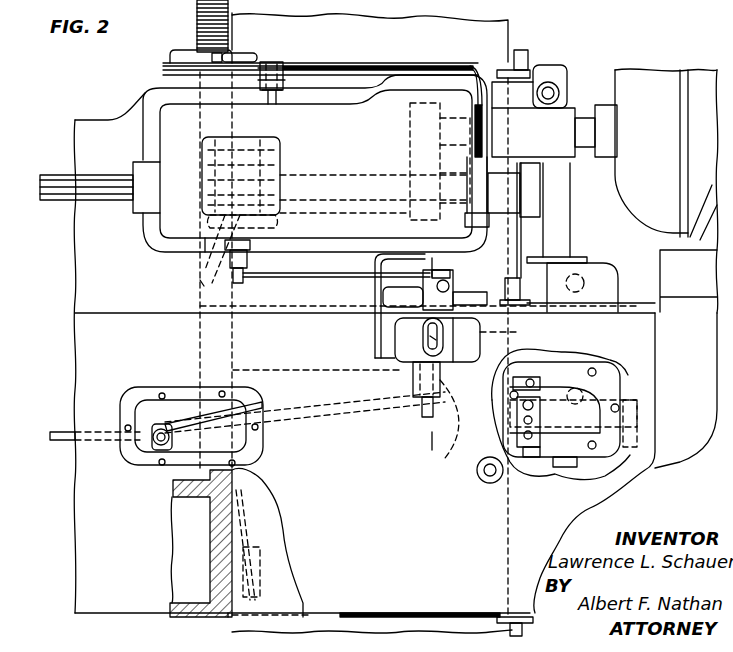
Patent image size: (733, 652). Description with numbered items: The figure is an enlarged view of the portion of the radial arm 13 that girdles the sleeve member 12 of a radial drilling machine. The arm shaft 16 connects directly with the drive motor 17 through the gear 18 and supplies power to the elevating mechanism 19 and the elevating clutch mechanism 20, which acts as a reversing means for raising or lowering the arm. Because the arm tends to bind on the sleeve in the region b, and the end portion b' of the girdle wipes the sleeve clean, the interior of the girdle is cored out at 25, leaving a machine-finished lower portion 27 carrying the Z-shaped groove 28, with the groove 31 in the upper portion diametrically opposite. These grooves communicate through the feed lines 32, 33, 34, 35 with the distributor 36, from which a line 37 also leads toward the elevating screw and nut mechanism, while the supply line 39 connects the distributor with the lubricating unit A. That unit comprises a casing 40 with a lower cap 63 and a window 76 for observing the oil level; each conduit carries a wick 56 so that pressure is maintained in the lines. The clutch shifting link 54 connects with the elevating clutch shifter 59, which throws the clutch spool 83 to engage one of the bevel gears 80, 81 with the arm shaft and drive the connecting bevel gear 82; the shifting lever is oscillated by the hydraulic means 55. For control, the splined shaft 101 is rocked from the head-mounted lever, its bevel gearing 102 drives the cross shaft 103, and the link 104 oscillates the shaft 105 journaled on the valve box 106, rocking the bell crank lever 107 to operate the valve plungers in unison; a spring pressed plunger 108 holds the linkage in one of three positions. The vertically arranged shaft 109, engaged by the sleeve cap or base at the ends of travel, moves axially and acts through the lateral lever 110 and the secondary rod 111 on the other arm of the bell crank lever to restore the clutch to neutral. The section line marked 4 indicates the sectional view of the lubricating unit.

The sleeve member 12 is at (493, 33).
The radial arm 13 is at (85, 258).
The arm shaft 16 is at (100, 179).
The drive motor 17 is at (643, 83).
The gear 18 is at (408, 122).
The elevating mechanism 19 is at (205, 10).
The elevating clutch mechanism 20 is at (195, 150).
The cored-out portion 25 is at (258, 472).
The lower portion 27 is at (233, 577).
The Z-shaped groove 28 is at (250, 548).
The Z-shaped groove 31 is at (505, 100).
The feed line 32 is at (170, 75).
The feed line 33 is at (170, 70).
The feed line 34 is at (262, 64).
The feed line 35 is at (342, 66).
The distributor 36 is at (284, 92).
The line 37 is at (235, 59).
The supply line 39 is at (381, 66).
The casing 40 is at (410, 386).
The clutch shifting link 54 is at (315, 273).
The hydraulic means 55 is at (462, 447).
The wick 56 is at (207, 496).
The elevating clutch shifter 59 is at (249, 266).
The lower cap 63 is at (420, 404).
The window 76 is at (433, 338).
The bevel gear 80 is at (207, 250).
The bevel gear 81 is at (275, 218).
The connecting bevel gear 82 is at (272, 140).
The clutch spool 83 is at (200, 283).
The splined shaft 101 is at (66, 432).
The bevel gearing 102 is at (150, 392).
The cross shaft 103 is at (160, 447).
The link 104 is at (305, 412).
The shaft 105 is at (530, 382).
The valve box 106 is at (597, 403).
The bell crank lever 107 is at (512, 392).
The spring pressed plunger 108 is at (516, 420).
The vertically arranged shaft 109 is at (528, 56).
The lateral lever 110 is at (512, 283).
The secondary rod 111 is at (522, 332).
The section line 4 is at (426, 266).
The lubricating unit A is at (398, 333).
The binding region b is at (184, 625).
The girdle end portion b' is at (277, 600).